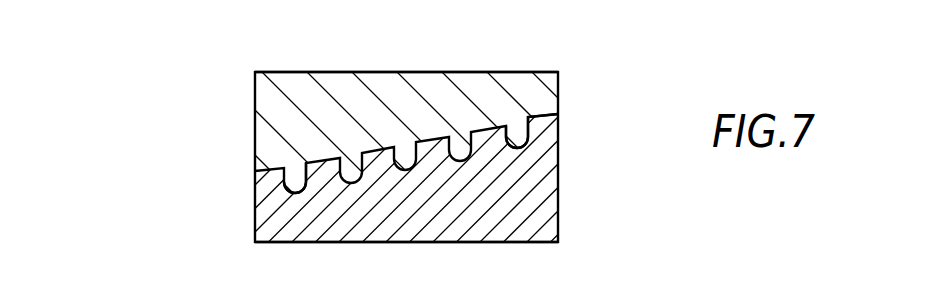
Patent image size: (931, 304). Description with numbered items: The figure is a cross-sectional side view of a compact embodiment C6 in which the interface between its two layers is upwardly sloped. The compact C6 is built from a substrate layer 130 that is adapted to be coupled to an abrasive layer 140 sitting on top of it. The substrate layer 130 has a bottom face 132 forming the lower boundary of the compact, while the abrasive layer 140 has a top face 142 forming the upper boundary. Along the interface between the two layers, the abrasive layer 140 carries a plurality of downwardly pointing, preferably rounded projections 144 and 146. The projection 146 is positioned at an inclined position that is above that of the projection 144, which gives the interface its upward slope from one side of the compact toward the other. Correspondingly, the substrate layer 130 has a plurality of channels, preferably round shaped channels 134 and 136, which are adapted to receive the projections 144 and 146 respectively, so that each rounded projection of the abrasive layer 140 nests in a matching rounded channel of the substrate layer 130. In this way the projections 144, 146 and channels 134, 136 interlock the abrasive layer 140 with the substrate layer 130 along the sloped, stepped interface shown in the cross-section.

The substrate layer 130 is at (255, 217).
The bottom face 132 is at (419, 243).
The round shaped channel 134 is at (311, 193).
The round shaped channel 136 is at (528, 141).
The abrasive layer 140 is at (268, 98).
The top face 142 is at (310, 71).
The rounded projection 144 is at (300, 186).
The rounded projection 146 is at (523, 142).
The compact embodiment C6 is at (130, 157).